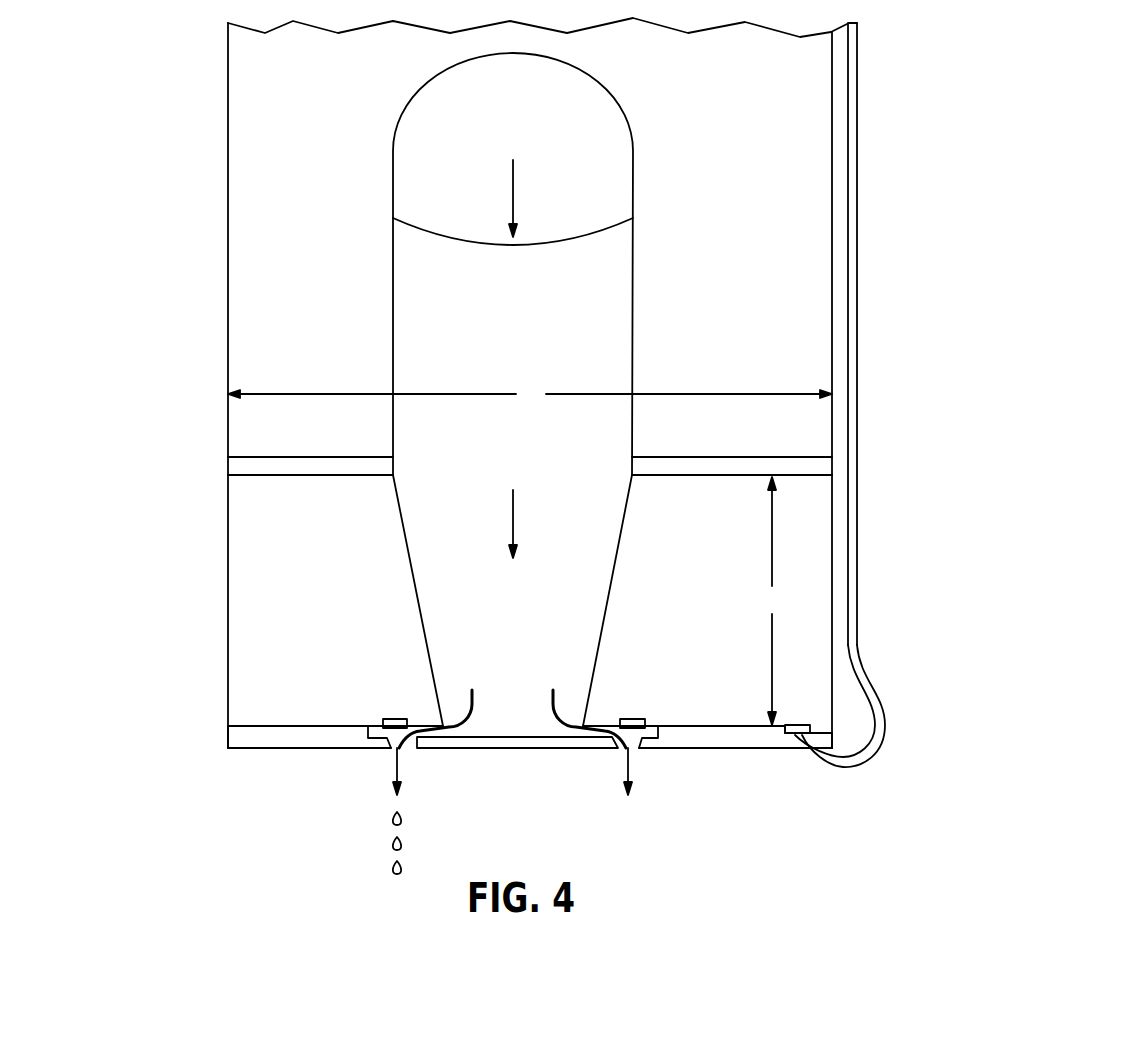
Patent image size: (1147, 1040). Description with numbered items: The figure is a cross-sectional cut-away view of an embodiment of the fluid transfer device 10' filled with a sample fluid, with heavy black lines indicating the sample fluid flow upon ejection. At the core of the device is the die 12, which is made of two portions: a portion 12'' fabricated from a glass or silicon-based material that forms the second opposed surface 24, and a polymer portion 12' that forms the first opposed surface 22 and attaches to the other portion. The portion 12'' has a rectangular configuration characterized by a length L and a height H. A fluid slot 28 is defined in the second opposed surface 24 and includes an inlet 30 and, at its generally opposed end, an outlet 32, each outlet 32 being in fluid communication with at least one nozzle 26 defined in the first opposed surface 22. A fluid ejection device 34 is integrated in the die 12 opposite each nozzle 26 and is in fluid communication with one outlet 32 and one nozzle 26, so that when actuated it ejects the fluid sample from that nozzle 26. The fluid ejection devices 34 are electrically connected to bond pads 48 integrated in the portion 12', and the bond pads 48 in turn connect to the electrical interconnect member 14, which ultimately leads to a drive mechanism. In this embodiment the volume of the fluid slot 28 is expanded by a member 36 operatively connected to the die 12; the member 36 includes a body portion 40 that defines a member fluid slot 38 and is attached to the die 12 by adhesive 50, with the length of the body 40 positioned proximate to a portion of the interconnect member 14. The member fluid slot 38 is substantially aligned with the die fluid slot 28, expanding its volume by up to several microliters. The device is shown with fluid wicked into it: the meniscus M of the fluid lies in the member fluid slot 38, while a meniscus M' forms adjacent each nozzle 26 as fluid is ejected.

The fluid transfer device 10' is at (177, 820).
The die 12 is at (470, 611).
The die portion 12' is at (530, 784).
The die portion 12'' is at (529, 600).
The electrical interconnect member 14 is at (858, 509).
The first opposed surface 22 is at (243, 750).
The second opposed surface 24 is at (246, 474).
The nozzle 26 is at (392, 750).
The fluid slot 28 is at (421, 622).
The inlet 30 is at (412, 460).
The outlet 32 is at (572, 705).
The fluid ejection device 34 is at (395, 719).
The member 36 is at (223, 148).
The member fluid slot 38 is at (395, 302).
The body portion 40 is at (732, 206).
The bond pads 48 is at (788, 734).
The adhesive 50 is at (316, 465).
The meniscus M is at (458, 215).
The meniscus M' is at (505, 812).
The length L is at (530, 394).
The height H is at (772, 601).